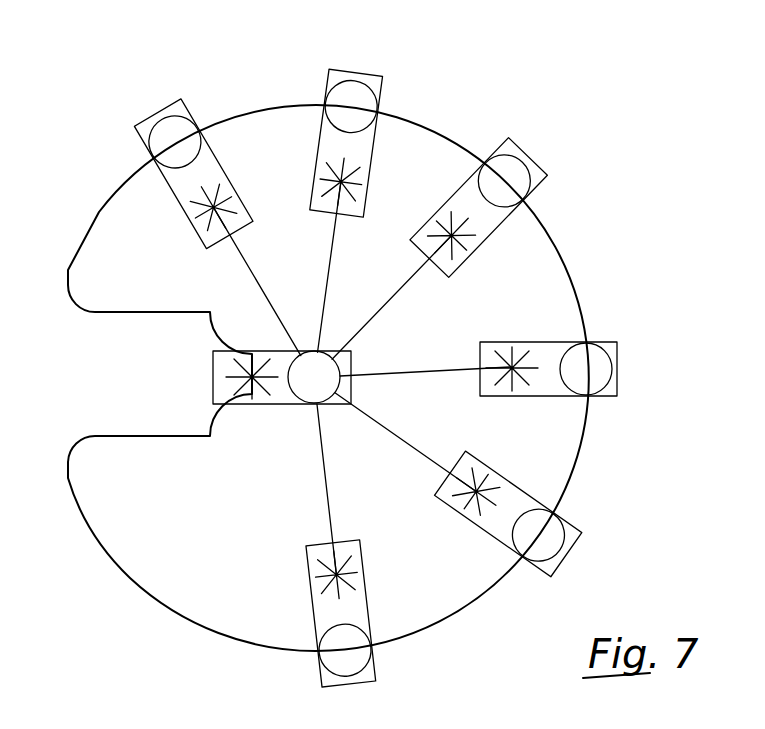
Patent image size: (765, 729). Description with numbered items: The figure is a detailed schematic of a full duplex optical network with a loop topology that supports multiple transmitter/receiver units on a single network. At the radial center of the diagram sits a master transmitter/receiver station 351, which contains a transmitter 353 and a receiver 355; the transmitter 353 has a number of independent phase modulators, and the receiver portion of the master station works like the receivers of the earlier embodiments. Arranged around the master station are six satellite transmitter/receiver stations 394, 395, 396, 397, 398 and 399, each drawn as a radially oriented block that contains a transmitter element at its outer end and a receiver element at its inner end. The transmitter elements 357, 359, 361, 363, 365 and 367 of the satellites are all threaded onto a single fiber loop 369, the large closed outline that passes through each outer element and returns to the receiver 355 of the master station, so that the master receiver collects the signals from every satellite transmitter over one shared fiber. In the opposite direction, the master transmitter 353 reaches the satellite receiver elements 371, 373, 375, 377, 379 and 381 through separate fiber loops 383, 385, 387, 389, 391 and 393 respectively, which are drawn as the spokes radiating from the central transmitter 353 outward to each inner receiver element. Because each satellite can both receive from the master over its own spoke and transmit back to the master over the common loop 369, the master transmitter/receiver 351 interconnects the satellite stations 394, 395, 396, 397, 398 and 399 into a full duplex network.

The master transmitter/receiver station 351 is at (213, 352).
The transmitter 353 is at (305, 388).
The receiver 355 is at (237, 382).
The transmitter element 357 is at (166, 127).
The transmitter element 359 is at (350, 85).
The transmitter element 361 is at (508, 168).
The transmitter element 363 is at (598, 355).
The transmitter element 365 is at (548, 533).
The transmitter element 367 is at (360, 658).
The single fiber loop 369 is at (109, 203).
The receiver element 371 is at (230, 185).
The receiver element 373 is at (356, 180).
The receiver element 375 is at (465, 240).
The receiver element 377 is at (485, 356).
The receiver element 379 is at (475, 472).
The receiver element 381 is at (348, 571).
The fiber loop 383 is at (272, 290).
The fiber loop 385 is at (328, 307).
The fiber loop 387 is at (397, 288).
The fiber loop 389 is at (403, 373).
The fiber loop 391 is at (405, 443).
The fiber loop 393 is at (322, 470).
The satellite transmitter/receiver station 394 is at (175, 100).
The satellite transmitter/receiver station 395 is at (383, 77).
The satellite transmitter/receiver station 396 is at (548, 177).
The satellite transmitter/receiver station 397 is at (618, 396).
The satellite transmitter/receiver station 398 is at (553, 575).
The satellite transmitter/receiver station 399 is at (320, 683).